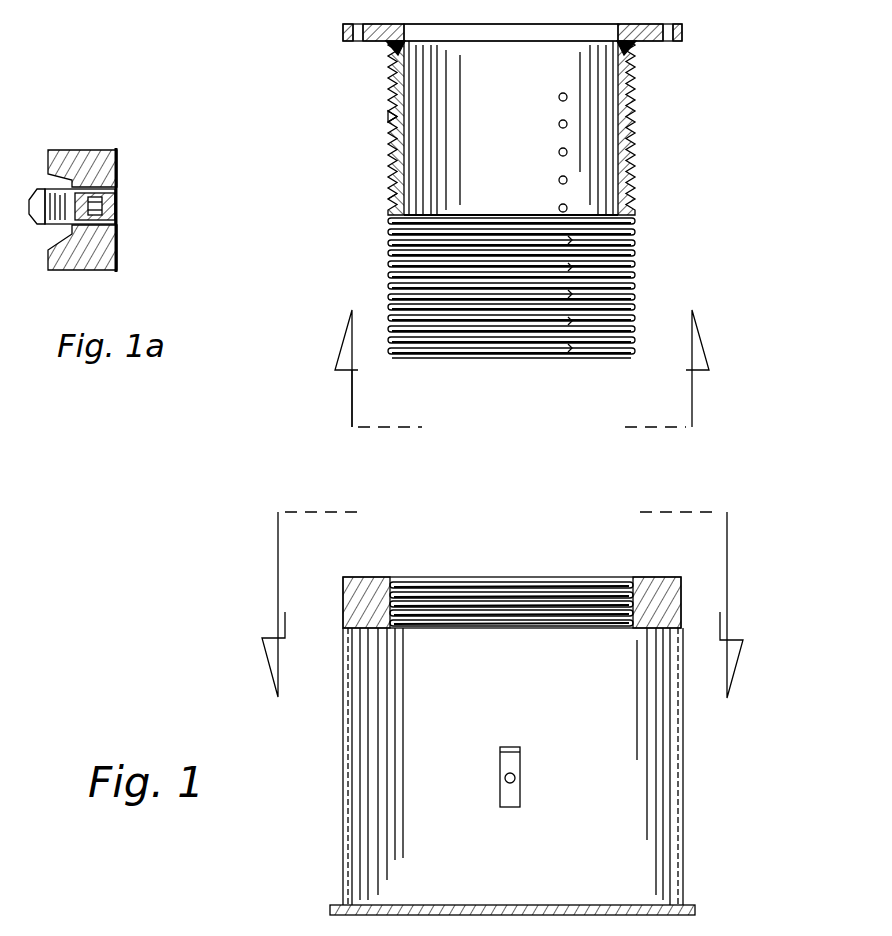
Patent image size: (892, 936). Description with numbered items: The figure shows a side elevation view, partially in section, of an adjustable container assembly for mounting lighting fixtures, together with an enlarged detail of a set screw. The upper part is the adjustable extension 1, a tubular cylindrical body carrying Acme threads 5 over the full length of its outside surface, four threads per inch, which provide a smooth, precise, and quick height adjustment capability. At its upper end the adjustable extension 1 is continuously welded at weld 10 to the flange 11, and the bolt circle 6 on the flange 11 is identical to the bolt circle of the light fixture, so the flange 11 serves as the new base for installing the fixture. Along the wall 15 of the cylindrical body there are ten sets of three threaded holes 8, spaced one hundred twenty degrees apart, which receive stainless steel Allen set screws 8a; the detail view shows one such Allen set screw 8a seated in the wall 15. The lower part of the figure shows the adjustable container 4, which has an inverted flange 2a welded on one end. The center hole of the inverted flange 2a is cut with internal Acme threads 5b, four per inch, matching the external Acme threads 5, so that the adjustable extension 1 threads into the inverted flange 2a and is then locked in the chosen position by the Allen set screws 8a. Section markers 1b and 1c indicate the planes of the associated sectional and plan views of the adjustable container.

In FIG. 1, the adjustable extension 1 is at (637, 140).
In FIG. 1, the adjustable container 4 is at (683, 760).
In FIG. 1, the Acme threads 5 is at (636, 270).
In FIG. 1, the Acme threads 5b is at (618, 622).
In FIG. 1, the bolt circle 6 is at (668, 44).
In FIG. 1, the threaded holes 8 is at (117, 207).
In FIG. 1A, the Allen set screws 8a is at (40, 187).
In FIG. 1, the weld 10 is at (640, 50).
In FIG. 1, the flange 11 is at (637, 24).
In FIG. 1, the wall 15 is at (388, 195).
In FIG. 1A, the wall 15 is at (112, 247).
In FIG. 1, the inverted flange 2a is at (360, 577).
In FIG. 1, the section line 1b is at (522, 368).
In FIG. 1, the section line 1c is at (499, 611).